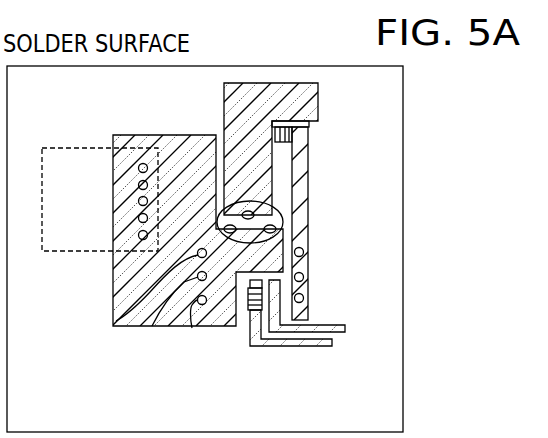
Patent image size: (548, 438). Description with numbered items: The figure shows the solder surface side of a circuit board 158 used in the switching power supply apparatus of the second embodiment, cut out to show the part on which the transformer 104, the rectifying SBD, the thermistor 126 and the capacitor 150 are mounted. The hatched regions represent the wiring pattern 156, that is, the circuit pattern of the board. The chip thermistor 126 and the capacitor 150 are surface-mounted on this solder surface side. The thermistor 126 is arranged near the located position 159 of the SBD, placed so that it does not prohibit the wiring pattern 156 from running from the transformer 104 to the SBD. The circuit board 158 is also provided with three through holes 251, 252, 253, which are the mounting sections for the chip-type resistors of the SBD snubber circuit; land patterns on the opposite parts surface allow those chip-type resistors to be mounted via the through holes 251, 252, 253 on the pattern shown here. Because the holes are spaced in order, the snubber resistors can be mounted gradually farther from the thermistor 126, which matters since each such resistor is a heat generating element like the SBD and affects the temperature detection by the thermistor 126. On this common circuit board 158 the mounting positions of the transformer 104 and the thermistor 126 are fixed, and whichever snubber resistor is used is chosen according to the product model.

The transformer 104 is at (103, 167).
The capacitor 150 is at (293, 138).
The circuit board 158 is at (403, 110).
The located position of the SBD 159 is at (283, 222).
The through hole 253 is at (116, 320).
The through hole 252 is at (152, 326).
The through hole 251 is at (192, 328).
The wiring pattern 156 is at (123, 284).
The thermistor 126 is at (249, 305).